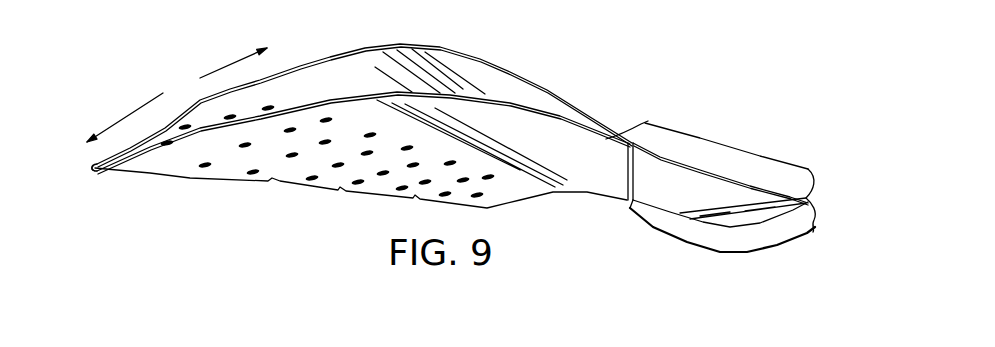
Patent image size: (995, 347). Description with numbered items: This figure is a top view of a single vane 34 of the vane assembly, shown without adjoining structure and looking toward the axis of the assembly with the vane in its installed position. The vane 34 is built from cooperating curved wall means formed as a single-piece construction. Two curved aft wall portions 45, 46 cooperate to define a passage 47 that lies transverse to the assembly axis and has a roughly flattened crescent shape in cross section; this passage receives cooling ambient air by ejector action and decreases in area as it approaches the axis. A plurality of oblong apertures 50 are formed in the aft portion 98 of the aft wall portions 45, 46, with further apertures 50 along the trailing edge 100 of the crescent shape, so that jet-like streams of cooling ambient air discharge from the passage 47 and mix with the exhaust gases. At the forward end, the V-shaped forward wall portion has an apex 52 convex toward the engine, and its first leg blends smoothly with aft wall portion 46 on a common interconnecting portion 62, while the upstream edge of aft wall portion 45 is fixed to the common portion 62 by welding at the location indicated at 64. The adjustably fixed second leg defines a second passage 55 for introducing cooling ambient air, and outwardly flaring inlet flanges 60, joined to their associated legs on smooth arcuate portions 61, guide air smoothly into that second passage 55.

The vane 34 is at (613, 78).
The aft wall portion 45 is at (573, 158).
The aft wall portion 46 is at (498, 65).
The passage 47 is at (462, 77).
The apertures 50 is at (312, 179).
The apex 52 is at (818, 200).
The second passage 55 is at (703, 193).
The inlet flanges 60 is at (690, 148).
The arcuate portions 61 is at (700, 168).
The common interconnecting portion 62 is at (650, 124).
The fixing location 64 is at (622, 173).
The aft portion 98 is at (177, 95).
The trailing edge 100 is at (94, 169).